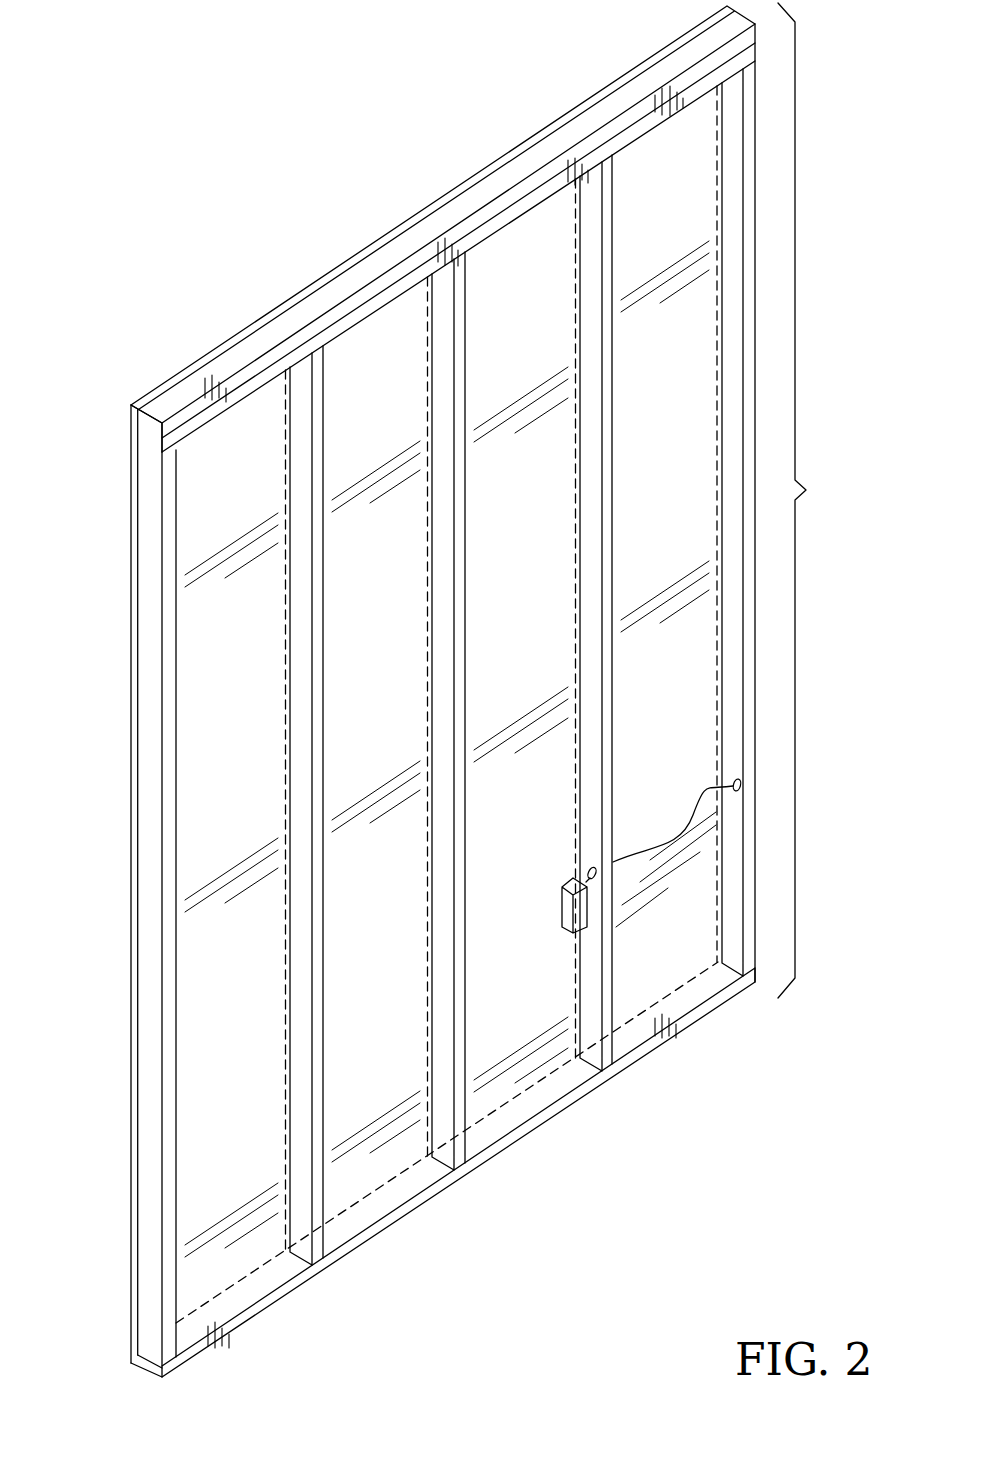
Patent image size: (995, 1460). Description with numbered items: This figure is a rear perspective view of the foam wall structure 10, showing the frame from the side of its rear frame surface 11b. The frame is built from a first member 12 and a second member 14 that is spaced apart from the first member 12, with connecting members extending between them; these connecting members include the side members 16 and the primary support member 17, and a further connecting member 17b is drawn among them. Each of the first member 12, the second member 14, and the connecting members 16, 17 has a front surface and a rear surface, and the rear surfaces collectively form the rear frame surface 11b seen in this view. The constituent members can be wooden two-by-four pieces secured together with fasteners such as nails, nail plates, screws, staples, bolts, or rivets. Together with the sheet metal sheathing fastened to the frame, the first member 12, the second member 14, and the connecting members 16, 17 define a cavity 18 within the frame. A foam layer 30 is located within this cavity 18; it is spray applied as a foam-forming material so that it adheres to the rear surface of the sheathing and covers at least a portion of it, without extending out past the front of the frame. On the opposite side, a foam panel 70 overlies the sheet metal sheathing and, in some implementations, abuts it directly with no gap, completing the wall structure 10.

The wall structure 10 is at (818, 500).
The rear frame surface 11b is at (577, 1171).
The first member 12 is at (128, 403).
The second member 14 is at (700, 1018).
The side members 16 is at (760, 118).
The primary support member 17 is at (432, 300).
The header member 17b is at (462, 328).
The cavity 18 is at (233, 775).
The foam layer 30 is at (232, 985).
The foam panel 70 is at (130, 620).